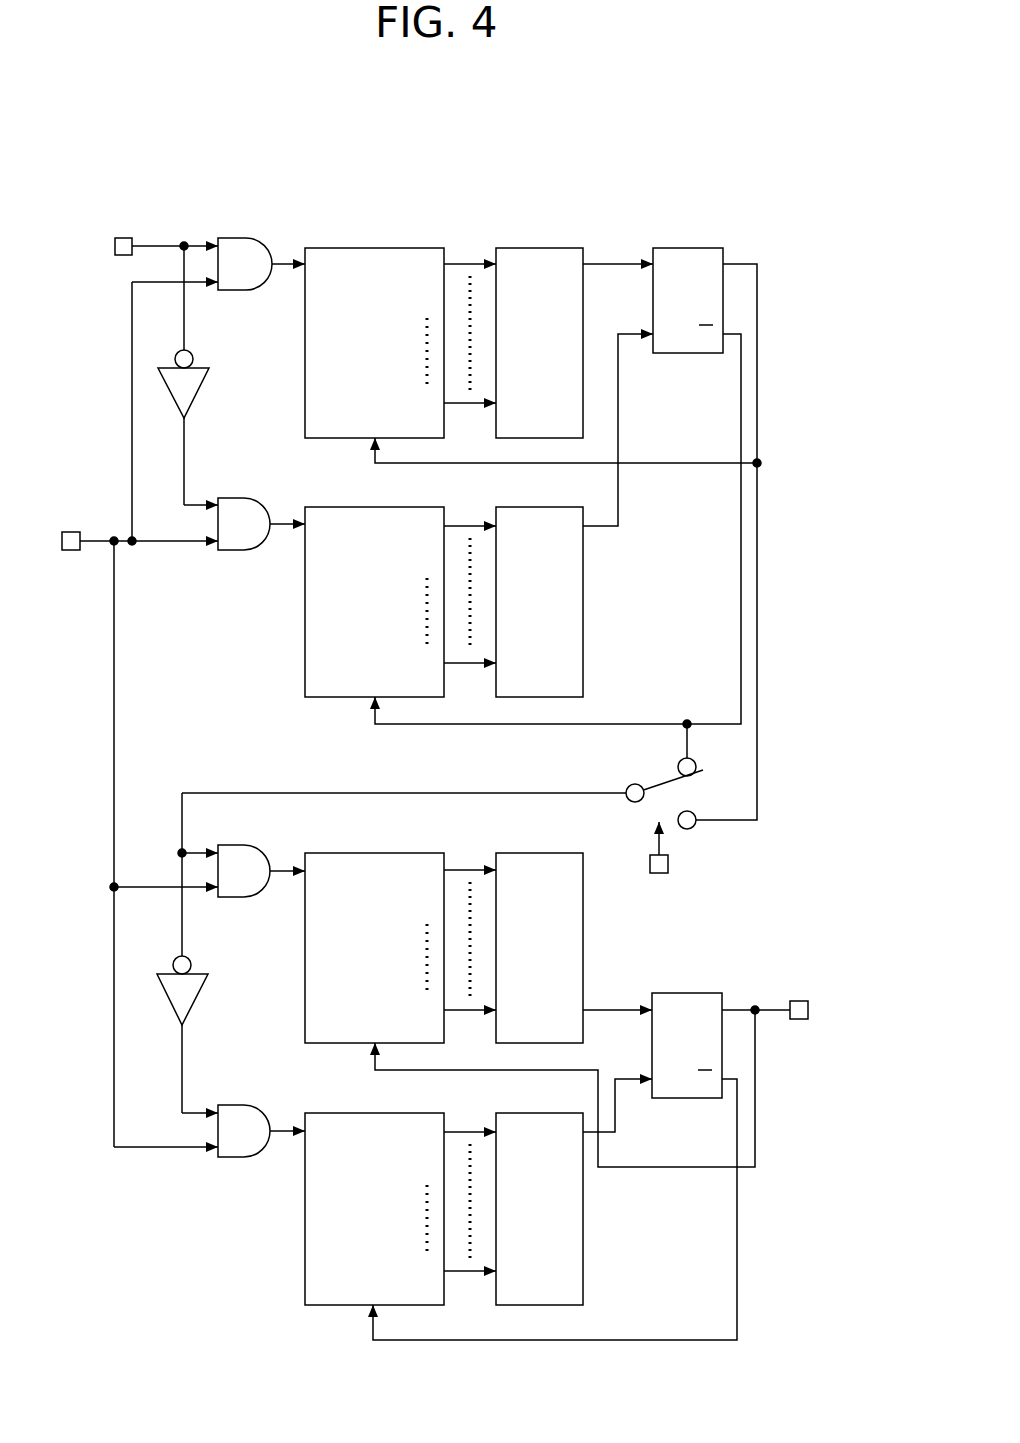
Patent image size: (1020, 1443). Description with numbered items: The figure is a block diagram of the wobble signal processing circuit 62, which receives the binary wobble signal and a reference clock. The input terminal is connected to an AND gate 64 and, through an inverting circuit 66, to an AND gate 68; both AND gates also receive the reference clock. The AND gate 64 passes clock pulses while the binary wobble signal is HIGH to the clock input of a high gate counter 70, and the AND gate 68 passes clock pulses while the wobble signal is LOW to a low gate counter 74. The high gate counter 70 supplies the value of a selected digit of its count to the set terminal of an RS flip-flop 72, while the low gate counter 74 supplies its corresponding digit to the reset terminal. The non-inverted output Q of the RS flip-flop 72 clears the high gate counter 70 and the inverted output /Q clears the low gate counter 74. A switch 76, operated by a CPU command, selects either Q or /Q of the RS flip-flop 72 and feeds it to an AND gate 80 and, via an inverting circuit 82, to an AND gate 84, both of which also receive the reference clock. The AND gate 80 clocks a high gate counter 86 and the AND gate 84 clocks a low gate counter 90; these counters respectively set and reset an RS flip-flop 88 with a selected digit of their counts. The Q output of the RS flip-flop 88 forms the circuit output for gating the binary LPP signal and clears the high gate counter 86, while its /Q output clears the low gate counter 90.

The wobble signal processing circuit 62 is at (264, 169).
The AND gate 64 is at (266, 238).
The inverting circuit 66 is at (205, 366).
The AND gate 68 is at (262, 498).
The high gate counter 70 is at (378, 248).
The RS flip-flop 72 is at (657, 248).
The low gate counter 74 is at (378, 507).
The switch 76 is at (664, 780).
The AND gate 80 is at (264, 846).
The inverting circuit 82 is at (204, 972).
The AND gate 84 is at (264, 1105).
The high gate counter 86 is at (378, 853).
The RS flip-flop 88 is at (656, 993).
The low gate counter 90 is at (378, 1113).